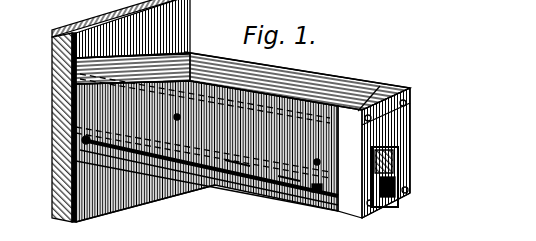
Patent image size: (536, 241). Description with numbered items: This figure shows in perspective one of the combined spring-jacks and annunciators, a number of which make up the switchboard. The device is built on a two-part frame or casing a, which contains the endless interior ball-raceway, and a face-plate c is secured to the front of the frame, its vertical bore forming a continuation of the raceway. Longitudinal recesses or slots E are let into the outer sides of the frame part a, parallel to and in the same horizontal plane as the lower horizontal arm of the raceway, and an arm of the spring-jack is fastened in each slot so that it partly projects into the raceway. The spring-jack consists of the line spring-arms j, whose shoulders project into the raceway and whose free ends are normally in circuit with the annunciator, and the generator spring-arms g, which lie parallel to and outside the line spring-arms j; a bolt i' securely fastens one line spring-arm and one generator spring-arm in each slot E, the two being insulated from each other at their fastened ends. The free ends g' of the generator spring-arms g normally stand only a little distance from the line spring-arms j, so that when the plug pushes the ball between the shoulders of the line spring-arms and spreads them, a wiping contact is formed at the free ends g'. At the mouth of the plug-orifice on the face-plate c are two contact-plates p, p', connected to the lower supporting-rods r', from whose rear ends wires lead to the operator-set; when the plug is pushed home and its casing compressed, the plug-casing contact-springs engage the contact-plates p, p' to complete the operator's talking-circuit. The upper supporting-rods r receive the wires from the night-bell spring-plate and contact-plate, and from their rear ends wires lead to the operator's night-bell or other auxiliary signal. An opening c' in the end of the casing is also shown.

The frame or casing a is at (340, 92).
The longitudinal recesses or slots E is at (190, 180).
The generator spring-arms g is at (226, 187).
The free ends of the generator spring-arms g' is at (281, 202).
The line spring-arms j is at (318, 189).
The bolt i' is at (118, 112).
The upper supporting-rods r is at (382, 113).
The lower supporting-rods r' is at (391, 205).
The face-plate c is at (394, 117).
The opening in end plate c' is at (400, 173).
The contact-plate p is at (406, 162).
The contact-plate p' is at (390, 203).